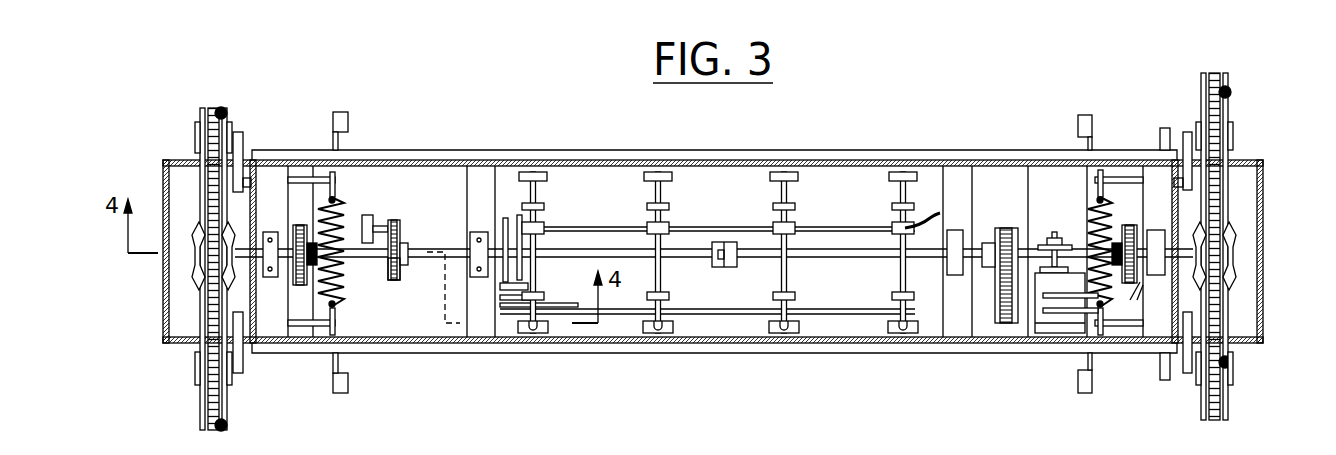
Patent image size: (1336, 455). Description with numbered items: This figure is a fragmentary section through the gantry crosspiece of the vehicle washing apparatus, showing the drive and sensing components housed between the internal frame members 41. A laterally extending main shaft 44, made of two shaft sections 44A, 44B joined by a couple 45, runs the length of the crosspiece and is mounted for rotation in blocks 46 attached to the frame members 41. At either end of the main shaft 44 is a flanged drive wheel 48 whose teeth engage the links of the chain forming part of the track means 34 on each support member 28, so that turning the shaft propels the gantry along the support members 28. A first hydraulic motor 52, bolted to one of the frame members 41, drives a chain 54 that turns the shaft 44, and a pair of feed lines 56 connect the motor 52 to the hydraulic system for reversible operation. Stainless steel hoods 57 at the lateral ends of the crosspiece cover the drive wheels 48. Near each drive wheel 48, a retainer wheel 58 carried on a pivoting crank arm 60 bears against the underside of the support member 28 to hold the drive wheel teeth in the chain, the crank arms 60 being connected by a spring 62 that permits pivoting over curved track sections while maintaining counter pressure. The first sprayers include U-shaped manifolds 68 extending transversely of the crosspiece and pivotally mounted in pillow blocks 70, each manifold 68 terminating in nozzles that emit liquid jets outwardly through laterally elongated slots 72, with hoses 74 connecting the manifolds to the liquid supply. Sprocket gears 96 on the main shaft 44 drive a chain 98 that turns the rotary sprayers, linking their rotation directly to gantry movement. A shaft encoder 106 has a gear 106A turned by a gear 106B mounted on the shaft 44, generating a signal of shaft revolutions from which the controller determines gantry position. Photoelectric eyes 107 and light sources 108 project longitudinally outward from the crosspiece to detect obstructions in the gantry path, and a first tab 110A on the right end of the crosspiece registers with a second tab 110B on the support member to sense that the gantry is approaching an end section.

The support member 28 is at (200, 410).
The track means 34 is at (226, 116).
The internal frame member 41 is at (275, 332).
The main shaft 44 is at (812, 266).
The first shaft section 44A is at (558, 250).
The second shaft section 44B is at (853, 213).
The couple 45 is at (717, 242).
The block 46 is at (268, 230).
The flanged drive wheel 48 is at (192, 262).
The first hydraulic motor 52 is at (1057, 333).
The chain 54 is at (1000, 325).
The feed line 56 is at (1068, 296).
The hood 57 is at (163, 193).
The retainer wheel 58 is at (197, 135).
The crank arm 60 is at (306, 180).
The spring 62 is at (343, 203).
The U-shaped manifold 68 is at (538, 273).
The pillow block 70 is at (673, 175).
The laterally elongated slot 72 is at (548, 173).
The hose 74 is at (874, 228).
The sprocket gear 96 is at (1140, 282).
The chain 98 is at (1143, 285).
The shaft encoder 106 is at (373, 218).
The encoder gear 106A is at (398, 232).
The shaft gear 106B is at (390, 276).
The photoelectric eye 107 is at (350, 116).
The light source 108 is at (1082, 115).
The first tab 110A is at (1165, 128).
The second tab 110B is at (1165, 380).